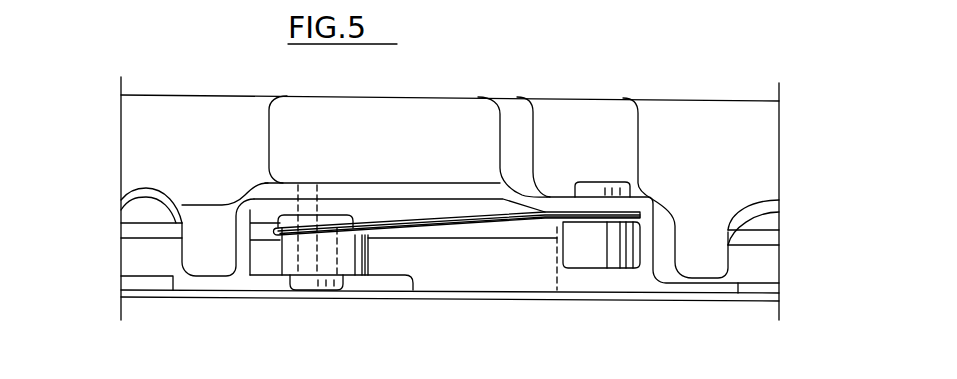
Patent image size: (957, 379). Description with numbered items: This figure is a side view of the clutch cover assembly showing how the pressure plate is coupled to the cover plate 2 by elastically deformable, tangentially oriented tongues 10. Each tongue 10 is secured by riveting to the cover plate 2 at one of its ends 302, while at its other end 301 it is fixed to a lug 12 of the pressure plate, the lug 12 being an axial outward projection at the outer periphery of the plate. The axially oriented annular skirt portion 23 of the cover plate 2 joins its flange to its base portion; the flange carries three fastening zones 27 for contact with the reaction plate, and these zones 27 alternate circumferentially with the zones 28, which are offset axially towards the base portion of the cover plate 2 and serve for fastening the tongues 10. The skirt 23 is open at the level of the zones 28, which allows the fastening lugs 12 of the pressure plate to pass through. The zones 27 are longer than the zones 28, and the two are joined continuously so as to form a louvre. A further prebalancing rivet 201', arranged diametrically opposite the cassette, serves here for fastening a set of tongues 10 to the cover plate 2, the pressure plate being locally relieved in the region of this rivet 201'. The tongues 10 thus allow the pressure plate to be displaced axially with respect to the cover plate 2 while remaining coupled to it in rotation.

The cover plate 2 is at (562, 97).
The annular skirt portion 23 is at (145, 140).
The zones for fastening the tongues 28 is at (408, 186).
The fastening zones 27 is at (200, 285).
The end of tongue fixed to the pressure plate 301 is at (298, 207).
The end of tongue secured to the cover plate 302 is at (642, 190).
The lug 12 is at (285, 257).
The tongues 10 is at (452, 236).
The prebalancing rivet 201' is at (615, 291).